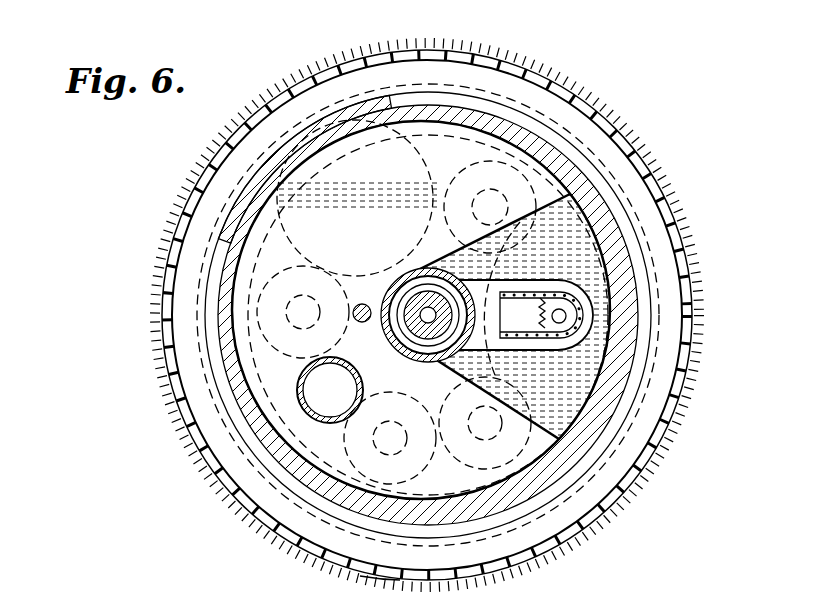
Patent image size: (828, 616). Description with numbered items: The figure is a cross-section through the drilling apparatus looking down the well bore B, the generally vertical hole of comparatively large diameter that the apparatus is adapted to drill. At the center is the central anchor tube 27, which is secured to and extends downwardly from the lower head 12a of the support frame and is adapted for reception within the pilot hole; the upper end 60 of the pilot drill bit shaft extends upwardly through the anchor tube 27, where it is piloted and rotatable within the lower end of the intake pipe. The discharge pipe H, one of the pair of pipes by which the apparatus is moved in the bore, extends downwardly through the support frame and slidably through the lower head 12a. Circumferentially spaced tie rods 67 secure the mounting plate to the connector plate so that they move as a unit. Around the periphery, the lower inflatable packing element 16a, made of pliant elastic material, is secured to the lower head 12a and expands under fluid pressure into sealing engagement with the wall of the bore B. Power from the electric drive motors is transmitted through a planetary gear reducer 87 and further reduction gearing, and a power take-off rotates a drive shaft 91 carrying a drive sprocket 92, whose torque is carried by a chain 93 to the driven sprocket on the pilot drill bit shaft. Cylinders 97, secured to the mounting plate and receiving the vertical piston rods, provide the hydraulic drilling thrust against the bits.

The lower head 12a is at (222, 294).
The lower inflatable packing element 16a is at (637, 152).
The planetary gear reducer 87 is at (252, 131).
The cylinder 97 is at (600, 138).
The central anchor tube 27 is at (402, 274).
The upper end of the pilot drill bit shaft 60 is at (416, 342).
The drive sprocket 92 is at (550, 340).
The chain 93 is at (521, 290).
The drive shaft 91 is at (554, 317).
The tie rods 67 is at (361, 323).
The discharge pipe H is at (330, 420).
The vertical hole B is at (386, 568).